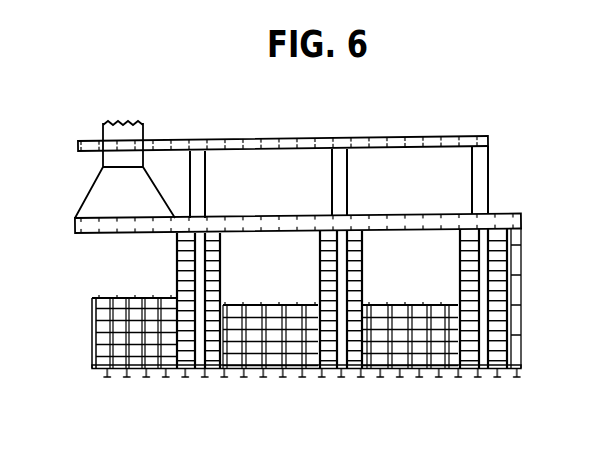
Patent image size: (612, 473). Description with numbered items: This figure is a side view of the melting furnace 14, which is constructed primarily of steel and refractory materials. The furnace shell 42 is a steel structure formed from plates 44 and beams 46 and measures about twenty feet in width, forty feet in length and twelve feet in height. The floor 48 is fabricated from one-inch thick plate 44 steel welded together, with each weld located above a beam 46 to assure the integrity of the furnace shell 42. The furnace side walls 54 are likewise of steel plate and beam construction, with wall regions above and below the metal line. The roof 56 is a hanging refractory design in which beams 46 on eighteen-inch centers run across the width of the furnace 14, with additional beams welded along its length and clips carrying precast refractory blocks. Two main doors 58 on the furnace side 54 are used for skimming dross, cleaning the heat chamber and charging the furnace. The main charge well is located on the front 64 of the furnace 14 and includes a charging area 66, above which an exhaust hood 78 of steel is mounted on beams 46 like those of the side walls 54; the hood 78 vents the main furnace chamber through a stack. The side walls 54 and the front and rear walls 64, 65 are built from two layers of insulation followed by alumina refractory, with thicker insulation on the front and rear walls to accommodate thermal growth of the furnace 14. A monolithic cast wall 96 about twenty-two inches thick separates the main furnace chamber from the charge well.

The melting furnace 14 is at (505, 200).
The furnace shell 42 is at (357, 327).
The plate 44 is at (410, 372).
The beam 46 is at (75, 229).
The floor 48 is at (497, 372).
The furnace side wall 54 is at (112, 358).
The roof 56 is at (437, 213).
The main door 58 is at (267, 250).
The front wall 64 is at (92, 343).
The rear wall 65 is at (510, 273).
The charging area 66 is at (112, 346).
The exhaust hood 78 is at (86, 200).
The wall 96 is at (198, 340).